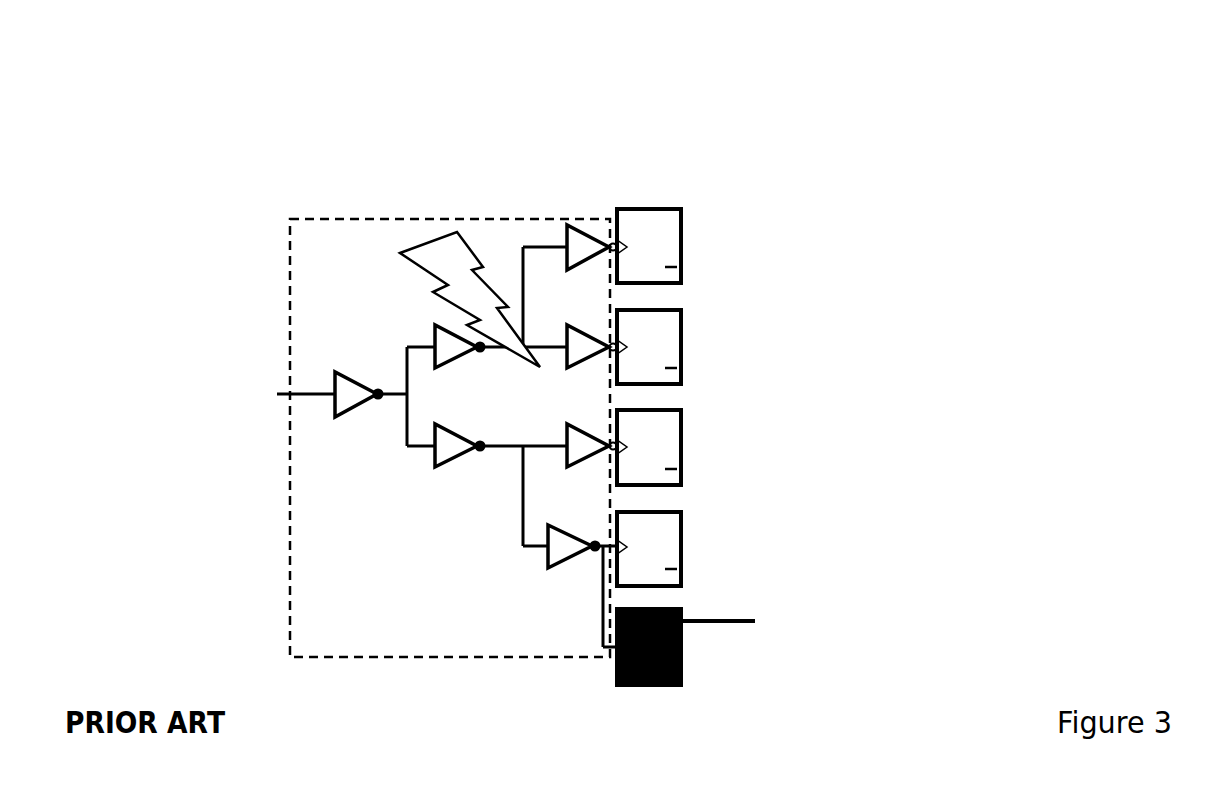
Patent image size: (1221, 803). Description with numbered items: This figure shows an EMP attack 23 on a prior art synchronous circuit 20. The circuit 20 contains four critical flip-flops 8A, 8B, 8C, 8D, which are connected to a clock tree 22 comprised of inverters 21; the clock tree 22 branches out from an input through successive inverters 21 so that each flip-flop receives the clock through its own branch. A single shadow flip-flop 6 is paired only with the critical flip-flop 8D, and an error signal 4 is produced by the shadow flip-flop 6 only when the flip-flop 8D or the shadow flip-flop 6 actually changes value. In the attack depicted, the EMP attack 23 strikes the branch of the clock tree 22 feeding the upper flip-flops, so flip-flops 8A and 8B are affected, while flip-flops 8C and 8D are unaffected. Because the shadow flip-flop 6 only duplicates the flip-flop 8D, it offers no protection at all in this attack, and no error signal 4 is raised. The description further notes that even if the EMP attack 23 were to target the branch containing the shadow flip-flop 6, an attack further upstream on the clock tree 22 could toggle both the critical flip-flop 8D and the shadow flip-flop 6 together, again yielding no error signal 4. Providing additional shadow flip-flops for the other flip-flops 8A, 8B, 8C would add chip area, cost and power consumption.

The synchronous circuit 20 is at (873, 115).
The clock tree 22 is at (290, 265).
The inverter 21 is at (347, 410).
The EMP attack 23 is at (440, 230).
The critical flip-flop 8A is at (680, 230).
The critical flip-flop 8B is at (680, 328).
The critical flip-flop 8C is at (680, 433).
The critical flip-flop 8D is at (680, 533).
The error signal 4 is at (730, 623).
The shadow flip-flop 6 is at (670, 687).